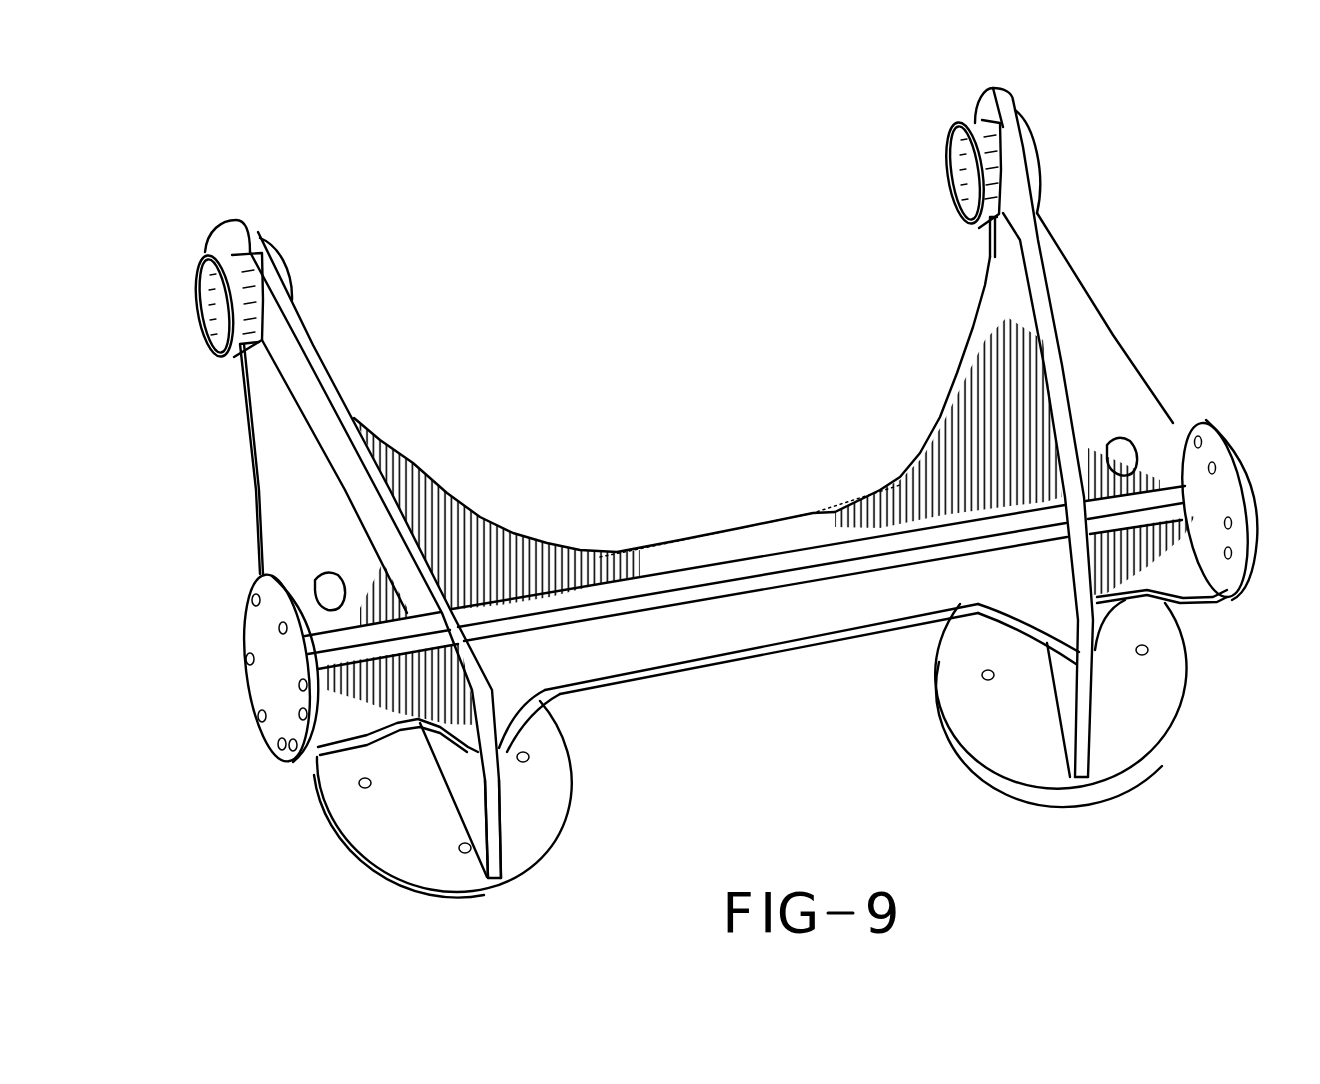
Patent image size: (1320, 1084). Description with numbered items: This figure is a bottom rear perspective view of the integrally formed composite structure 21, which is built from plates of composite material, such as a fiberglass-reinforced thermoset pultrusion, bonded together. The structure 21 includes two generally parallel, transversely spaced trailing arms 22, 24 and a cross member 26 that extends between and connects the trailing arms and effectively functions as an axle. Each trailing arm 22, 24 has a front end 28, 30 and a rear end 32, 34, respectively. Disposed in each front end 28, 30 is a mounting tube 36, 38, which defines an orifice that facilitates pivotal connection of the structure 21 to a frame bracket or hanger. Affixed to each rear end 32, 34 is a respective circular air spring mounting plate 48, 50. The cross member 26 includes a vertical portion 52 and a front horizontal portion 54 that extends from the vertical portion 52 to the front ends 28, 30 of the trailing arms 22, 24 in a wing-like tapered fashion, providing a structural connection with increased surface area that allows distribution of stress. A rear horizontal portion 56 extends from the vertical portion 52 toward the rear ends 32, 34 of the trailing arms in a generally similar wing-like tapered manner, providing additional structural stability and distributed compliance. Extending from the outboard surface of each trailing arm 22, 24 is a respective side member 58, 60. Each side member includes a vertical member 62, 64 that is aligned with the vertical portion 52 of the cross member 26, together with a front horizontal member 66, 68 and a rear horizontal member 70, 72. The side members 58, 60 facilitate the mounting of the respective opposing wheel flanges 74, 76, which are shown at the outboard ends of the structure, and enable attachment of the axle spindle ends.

The composite structure 21 is at (568, 342).
The trailing arm 22 is at (340, 368).
The trailing arm 24 is at (1075, 248).
The cross member 26 is at (780, 655).
The front end 28 is at (232, 224).
The front end 30 is at (997, 90).
The rear end 32 is at (490, 840).
The rear end 34 is at (1088, 720).
The mounting tube 36 is at (224, 263).
The mounting tube 38 is at (1030, 142).
The circular air spring mounting plate 48 is at (550, 790).
The circular air spring mounting plate 50 is at (993, 730).
The vertical portion 52 is at (660, 583).
The front horizontal portion 54 is at (453, 508).
The rear horizontal portion 56 is at (843, 613).
The side member 58 is at (247, 431).
The side member 60 is at (1113, 333).
The vertical member 62 is at (335, 640).
The vertical member 64 is at (1190, 493).
The front horizontal member 66 is at (293, 535).
The front horizontal member 68 is at (1107, 390).
The rear horizontal member 70 is at (338, 726).
The rear horizontal member 72 is at (1190, 580).
The wheel flange 74 is at (277, 730).
The wheel flange 76 is at (1210, 428).